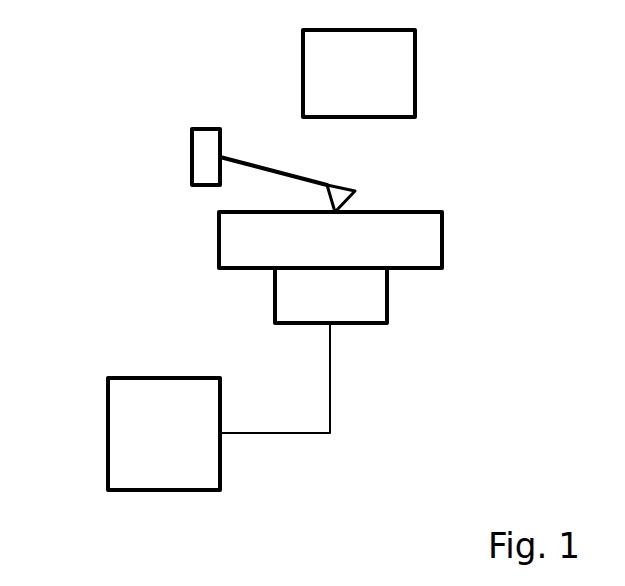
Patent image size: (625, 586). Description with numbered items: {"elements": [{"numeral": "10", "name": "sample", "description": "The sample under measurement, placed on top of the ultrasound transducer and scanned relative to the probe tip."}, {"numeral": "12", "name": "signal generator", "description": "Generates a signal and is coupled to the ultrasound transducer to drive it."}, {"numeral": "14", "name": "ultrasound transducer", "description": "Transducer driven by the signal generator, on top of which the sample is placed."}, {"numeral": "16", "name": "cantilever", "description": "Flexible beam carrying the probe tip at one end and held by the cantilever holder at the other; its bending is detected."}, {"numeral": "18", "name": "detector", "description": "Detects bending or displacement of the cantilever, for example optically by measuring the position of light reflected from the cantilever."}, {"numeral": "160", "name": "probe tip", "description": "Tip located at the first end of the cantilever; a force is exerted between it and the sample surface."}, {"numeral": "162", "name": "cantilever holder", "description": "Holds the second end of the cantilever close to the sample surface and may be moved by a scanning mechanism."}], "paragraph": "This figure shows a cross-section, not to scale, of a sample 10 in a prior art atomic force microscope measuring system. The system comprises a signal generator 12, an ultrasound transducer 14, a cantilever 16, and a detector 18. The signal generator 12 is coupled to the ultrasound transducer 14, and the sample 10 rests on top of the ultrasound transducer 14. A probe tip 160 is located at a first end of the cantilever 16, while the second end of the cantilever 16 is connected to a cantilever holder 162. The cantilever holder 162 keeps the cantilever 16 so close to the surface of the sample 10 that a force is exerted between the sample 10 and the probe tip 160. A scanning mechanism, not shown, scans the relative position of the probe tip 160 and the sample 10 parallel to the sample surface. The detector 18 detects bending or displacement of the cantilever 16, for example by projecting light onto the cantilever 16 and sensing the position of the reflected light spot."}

The sample / workpiece 10 is at (442, 237).
The control unit 12 is at (108, 405).
The holder / stage 14 is at (387, 300).
The light beam 16 is at (306, 175).
The detector / evaluation unit 18 is at (415, 70).
The beam spot 160 is at (353, 203).
The light source 162 is at (190, 132).